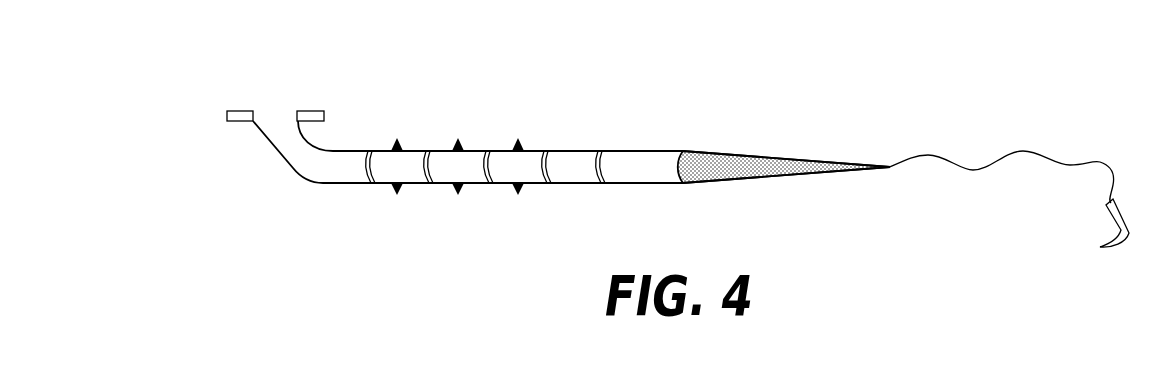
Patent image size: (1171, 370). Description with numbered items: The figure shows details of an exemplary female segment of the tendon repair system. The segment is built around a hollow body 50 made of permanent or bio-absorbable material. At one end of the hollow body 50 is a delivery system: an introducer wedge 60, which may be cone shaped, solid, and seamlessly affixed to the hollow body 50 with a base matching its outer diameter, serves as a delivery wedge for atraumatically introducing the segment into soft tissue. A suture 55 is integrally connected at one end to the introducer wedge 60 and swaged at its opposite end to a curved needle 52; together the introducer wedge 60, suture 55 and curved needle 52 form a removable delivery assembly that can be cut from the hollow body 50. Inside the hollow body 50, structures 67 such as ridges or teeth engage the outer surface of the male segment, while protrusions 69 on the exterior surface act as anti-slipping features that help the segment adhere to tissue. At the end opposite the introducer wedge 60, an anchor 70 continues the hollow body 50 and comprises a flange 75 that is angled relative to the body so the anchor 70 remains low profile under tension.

The hollow body 50 is at (643, 150).
The introducer wedge 60 is at (758, 155).
The flange 75 is at (236, 109).
The anchor 70 is at (309, 109).
The protrusions 69 is at (518, 140).
The structure 67 is at (372, 183).
The suture 55 is at (998, 163).
The curved needle 52 is at (1128, 233).